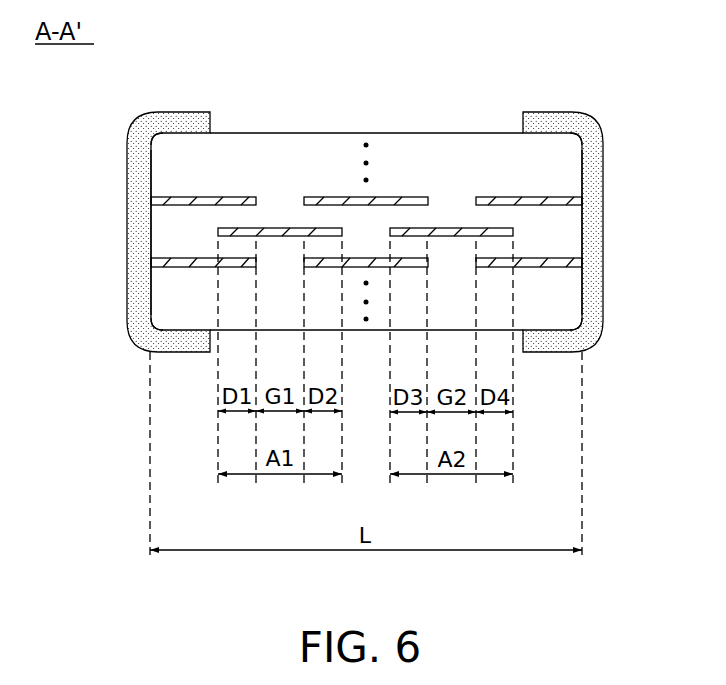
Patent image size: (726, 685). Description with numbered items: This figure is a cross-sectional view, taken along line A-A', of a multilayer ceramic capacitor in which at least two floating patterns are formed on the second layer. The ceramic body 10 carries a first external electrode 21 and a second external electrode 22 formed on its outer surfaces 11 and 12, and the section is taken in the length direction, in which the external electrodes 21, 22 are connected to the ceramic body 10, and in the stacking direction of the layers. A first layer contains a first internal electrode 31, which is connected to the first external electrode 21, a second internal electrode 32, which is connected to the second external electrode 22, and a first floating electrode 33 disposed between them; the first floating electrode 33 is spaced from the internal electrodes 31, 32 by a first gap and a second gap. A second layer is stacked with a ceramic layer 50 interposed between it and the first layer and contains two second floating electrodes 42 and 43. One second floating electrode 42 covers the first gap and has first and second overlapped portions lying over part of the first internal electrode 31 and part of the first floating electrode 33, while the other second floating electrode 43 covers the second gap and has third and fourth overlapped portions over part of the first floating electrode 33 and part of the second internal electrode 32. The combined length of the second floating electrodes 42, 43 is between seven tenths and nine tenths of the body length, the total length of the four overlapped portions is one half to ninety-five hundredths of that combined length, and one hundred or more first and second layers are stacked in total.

The ceramic body 10 is at (251, 146).
The outer surface 11 is at (150, 288).
The outer surface 12 is at (583, 288).
The first external electrode 21 is at (180, 121).
The second external electrode 22 is at (548, 119).
The first internal electrode 31 is at (175, 258).
The second internal electrode 32 is at (558, 258).
The first floating electrode 33 is at (362, 258).
The second floating electrode 42 is at (297, 228).
The second floating electrode 43 is at (452, 228).
The ceramic layer 50 is at (420, 250).